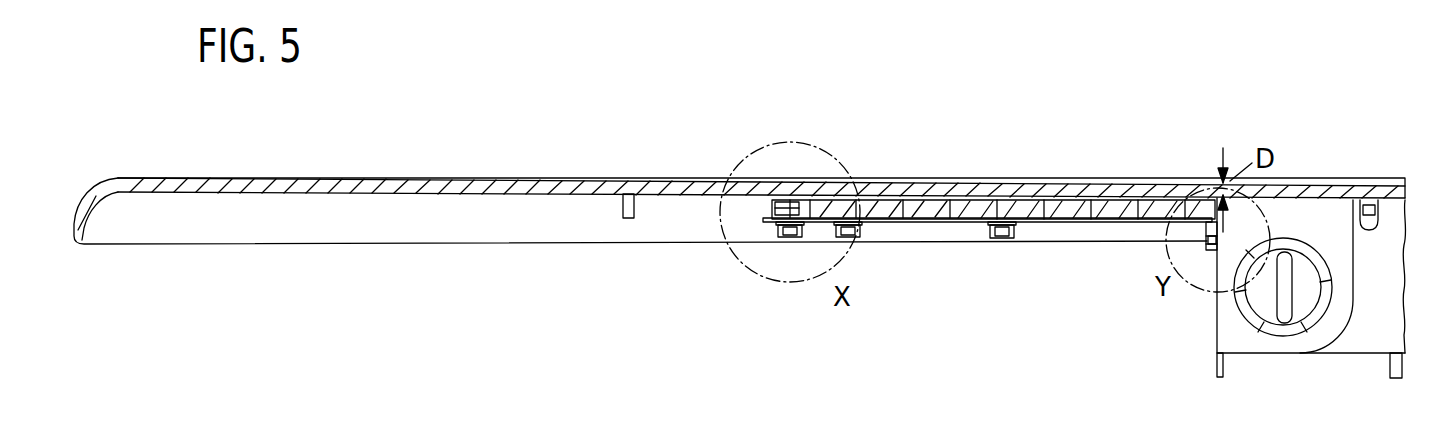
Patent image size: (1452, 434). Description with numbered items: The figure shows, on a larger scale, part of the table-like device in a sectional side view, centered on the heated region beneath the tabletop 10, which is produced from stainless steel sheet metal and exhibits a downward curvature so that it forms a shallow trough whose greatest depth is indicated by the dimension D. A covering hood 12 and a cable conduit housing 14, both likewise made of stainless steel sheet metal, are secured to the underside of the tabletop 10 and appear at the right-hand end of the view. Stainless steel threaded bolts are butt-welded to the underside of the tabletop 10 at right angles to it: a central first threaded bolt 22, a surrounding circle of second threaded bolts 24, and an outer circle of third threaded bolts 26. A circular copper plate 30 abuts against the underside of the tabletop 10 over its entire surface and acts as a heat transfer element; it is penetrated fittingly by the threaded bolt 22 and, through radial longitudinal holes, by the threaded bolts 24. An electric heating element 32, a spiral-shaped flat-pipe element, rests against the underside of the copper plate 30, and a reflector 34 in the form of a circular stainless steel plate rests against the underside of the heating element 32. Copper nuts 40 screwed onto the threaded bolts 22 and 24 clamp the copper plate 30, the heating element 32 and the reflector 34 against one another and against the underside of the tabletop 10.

The tabletop 10 is at (512, 188).
The covering hood 12 is at (1340, 353).
The cable conduit housing 14 is at (1352, 314).
The first threaded bolt 22 is at (1210, 258).
The second threaded bolts 24 is at (848, 240).
The third threaded bolts 26 is at (623, 212).
The copper plate 30 is at (908, 200).
The electric heating element 32 is at (968, 222).
The reflector 34 is at (772, 211).
The copper nuts 40 is at (1205, 232).